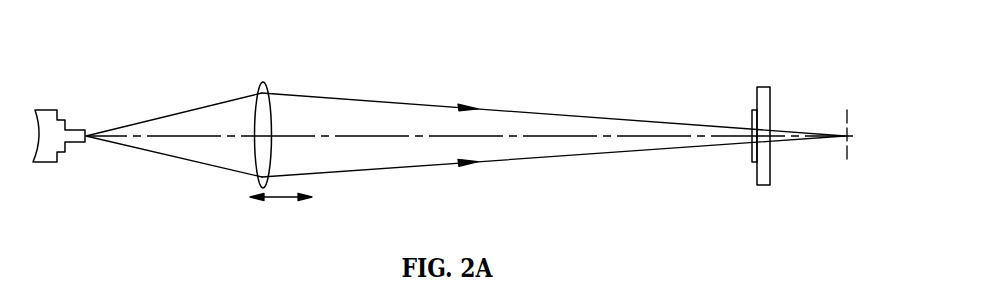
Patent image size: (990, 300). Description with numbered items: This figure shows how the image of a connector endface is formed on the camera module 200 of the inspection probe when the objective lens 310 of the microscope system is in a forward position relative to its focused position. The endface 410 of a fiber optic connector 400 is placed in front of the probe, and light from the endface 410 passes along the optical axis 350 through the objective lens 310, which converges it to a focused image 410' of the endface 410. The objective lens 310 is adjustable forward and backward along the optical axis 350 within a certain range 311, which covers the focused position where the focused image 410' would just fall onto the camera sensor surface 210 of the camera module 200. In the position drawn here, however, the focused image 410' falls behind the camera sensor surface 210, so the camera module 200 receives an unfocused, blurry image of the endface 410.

The camera module 200 is at (772, 170).
The camera sensor surface 210 is at (752, 118).
The objective lens 310 is at (267, 183).
The adjustment range 311 is at (277, 205).
The optical axis 350 is at (372, 135).
The fiber optic connector 400 is at (43, 170).
The endface 410 is at (161, 112).
The focused image 410' is at (612, 118).